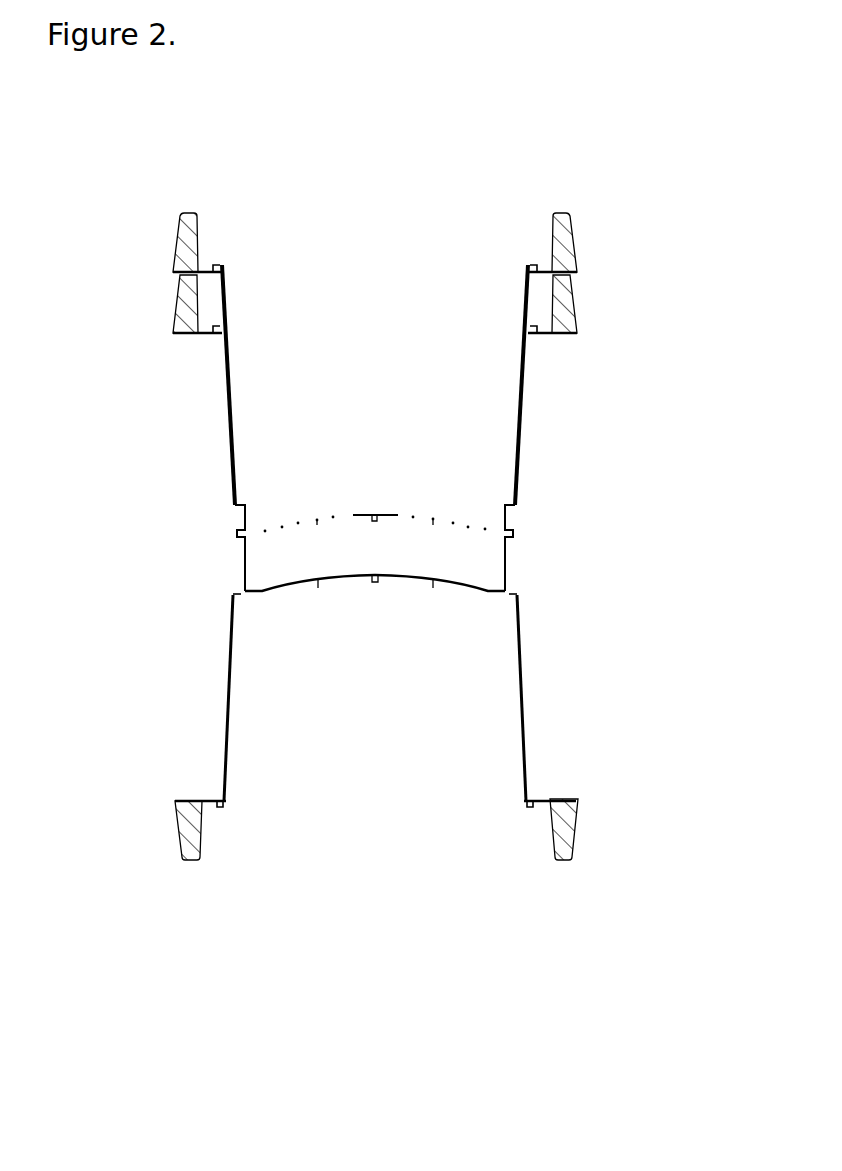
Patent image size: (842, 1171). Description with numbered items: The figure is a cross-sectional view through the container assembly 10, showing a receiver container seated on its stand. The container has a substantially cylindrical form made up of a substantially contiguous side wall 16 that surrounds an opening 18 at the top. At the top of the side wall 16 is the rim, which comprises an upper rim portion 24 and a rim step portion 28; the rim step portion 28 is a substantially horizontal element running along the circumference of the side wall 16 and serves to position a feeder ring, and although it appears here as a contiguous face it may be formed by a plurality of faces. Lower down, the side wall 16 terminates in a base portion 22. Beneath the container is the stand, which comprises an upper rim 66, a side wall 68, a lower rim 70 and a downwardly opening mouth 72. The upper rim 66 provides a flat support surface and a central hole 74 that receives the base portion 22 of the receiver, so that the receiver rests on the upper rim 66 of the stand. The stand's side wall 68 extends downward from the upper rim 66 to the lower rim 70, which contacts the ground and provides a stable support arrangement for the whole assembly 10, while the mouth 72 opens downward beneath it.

The containers in use 10 is at (263, 135).
The opening 18 is at (345, 235).
The upper rim portion 24 is at (560, 208).
The rim step portion 28 is at (542, 262).
The side wall 16 is at (525, 432).
The base portion 22 is at (237, 512).
The central hole 74 is at (243, 592).
The upper rim 66 is at (515, 590).
The side wall 68 is at (525, 690).
The lower rim 70 is at (583, 813).
The downwardly opening mouth 72 is at (387, 832).